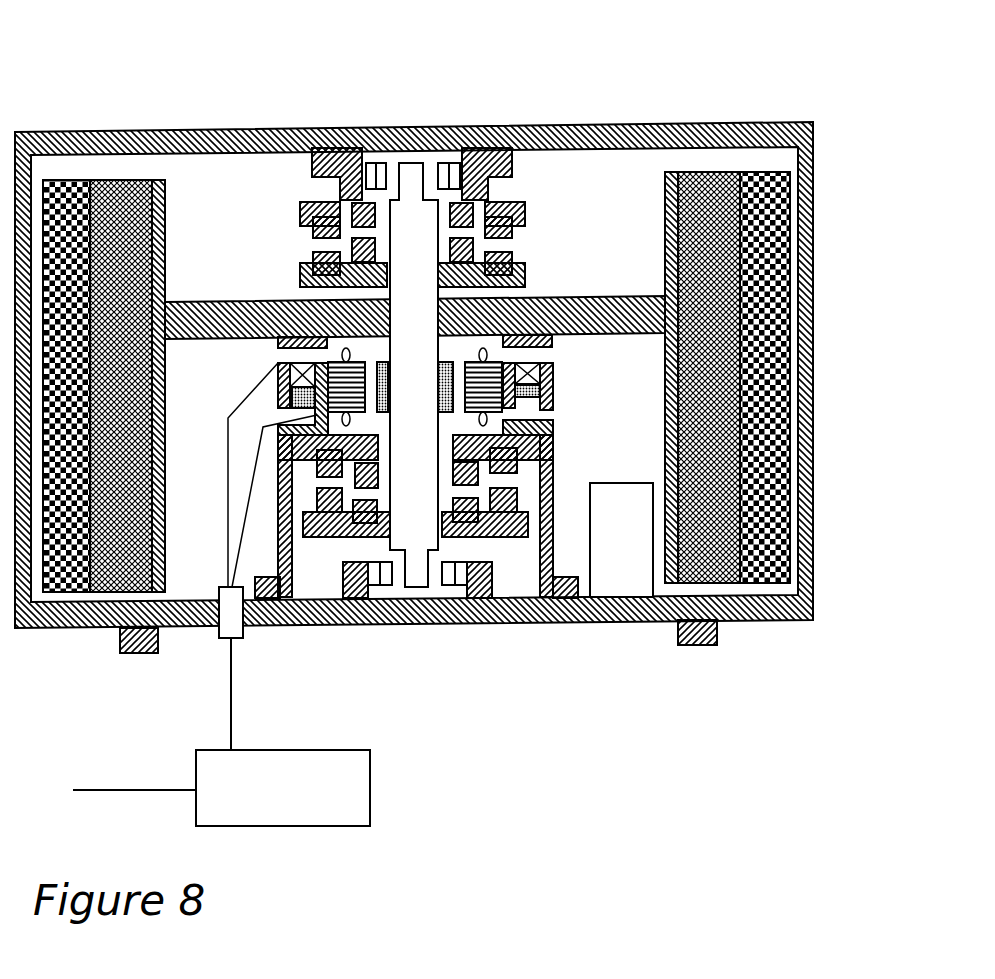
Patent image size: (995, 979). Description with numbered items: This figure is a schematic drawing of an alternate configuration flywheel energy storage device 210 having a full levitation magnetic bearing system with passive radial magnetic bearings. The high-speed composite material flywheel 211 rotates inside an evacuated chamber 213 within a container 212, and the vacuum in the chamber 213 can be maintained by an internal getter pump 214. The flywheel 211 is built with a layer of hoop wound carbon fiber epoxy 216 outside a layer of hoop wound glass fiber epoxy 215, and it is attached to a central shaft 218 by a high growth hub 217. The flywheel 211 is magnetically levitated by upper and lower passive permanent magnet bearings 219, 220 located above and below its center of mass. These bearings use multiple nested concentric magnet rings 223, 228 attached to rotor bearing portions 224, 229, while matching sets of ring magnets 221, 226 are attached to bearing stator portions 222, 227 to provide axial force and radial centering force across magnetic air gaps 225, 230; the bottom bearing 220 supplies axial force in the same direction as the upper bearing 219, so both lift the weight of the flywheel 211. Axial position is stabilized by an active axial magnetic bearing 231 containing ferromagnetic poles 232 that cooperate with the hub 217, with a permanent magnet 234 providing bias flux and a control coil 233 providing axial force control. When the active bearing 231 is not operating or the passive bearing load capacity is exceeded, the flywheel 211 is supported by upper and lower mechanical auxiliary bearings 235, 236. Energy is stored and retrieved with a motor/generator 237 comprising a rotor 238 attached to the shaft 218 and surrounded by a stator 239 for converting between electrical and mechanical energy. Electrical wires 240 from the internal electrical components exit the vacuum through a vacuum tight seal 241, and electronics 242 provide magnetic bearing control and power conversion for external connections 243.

The flywheel energy storage device 210 is at (119, 50).
The composite material flywheel 211 is at (728, 163).
The container 212 is at (813, 176).
The evacuated chamber 213 is at (639, 163).
The internal getter pump 214 is at (655, 597).
The hoop wound glass fiber epoxy layer 215 is at (725, 585).
The hoop wound carbon fiber epoxy layer 216 is at (780, 590).
The high growth hub 217 is at (160, 180).
The central shaft 218 is at (410, 160).
The upper passive permanent magnet bearing 219 is at (527, 239).
The lower passive permanent magnet bearing 220 is at (545, 475).
The ring magnets 221 is at (510, 221).
The bearing stator portion 222 is at (521, 158).
The nested concentric magnet rings 223 is at (515, 250).
The rotor bearing portion 224 is at (528, 270).
The magnetic air gap 225 is at (300, 246).
The ring magnets 226 is at (530, 448).
The bearing stator portion 227 is at (585, 597).
The nested concentric magnet rings 228 is at (343, 505).
The rotor bearing portion 229 is at (528, 515).
The magnetic air gap 230 is at (308, 485).
The active axial magnetic bearing 231 is at (562, 352).
The ferromagnetic poles 232 is at (553, 368).
The control coil 233 is at (290, 368).
The permanent magnet 234 is at (298, 398).
The upper mechanical auxiliary bearing 235 is at (452, 164).
The lower mechanical auxiliary bearing 236 is at (458, 590).
The motor/generator 237 is at (458, 420).
The rotor 238 is at (440, 398).
The stator 239 is at (463, 365).
The electrical wires 240 is at (232, 695).
The vacuum tight seal 241 is at (243, 630).
The electronics 242 is at (370, 793).
The external connections 243 is at (158, 785).